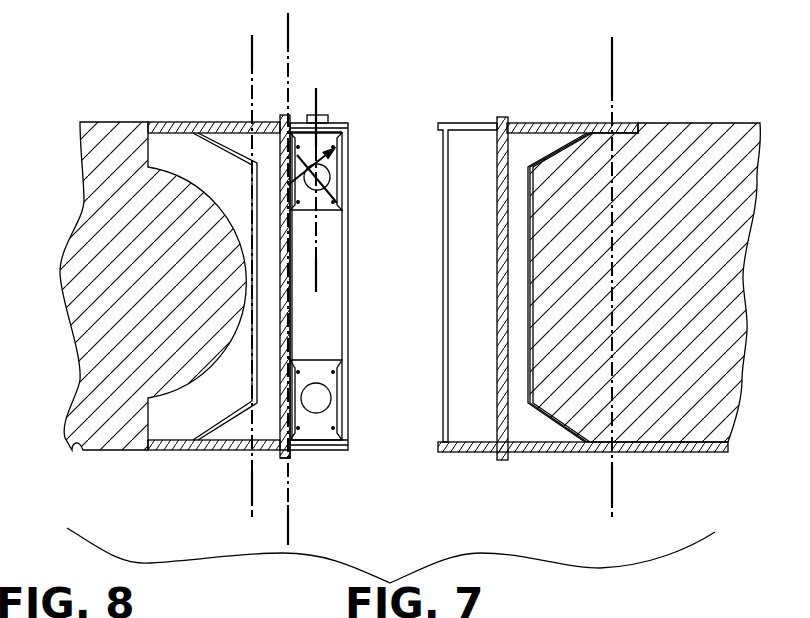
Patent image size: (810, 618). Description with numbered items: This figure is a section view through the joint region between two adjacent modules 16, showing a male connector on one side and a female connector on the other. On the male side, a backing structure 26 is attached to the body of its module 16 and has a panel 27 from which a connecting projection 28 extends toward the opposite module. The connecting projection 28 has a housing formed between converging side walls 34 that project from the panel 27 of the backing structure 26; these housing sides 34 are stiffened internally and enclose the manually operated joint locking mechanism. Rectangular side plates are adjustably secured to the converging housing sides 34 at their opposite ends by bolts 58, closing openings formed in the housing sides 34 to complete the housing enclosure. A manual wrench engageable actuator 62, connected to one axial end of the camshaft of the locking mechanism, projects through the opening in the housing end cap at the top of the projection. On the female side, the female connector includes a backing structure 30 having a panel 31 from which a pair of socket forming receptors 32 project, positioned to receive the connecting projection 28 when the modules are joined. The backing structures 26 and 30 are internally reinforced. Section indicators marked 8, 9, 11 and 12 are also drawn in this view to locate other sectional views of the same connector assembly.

The module 16 is at (123, 110).
The backing structure 26 is at (174, 92).
The connecting projection 28 is at (358, 174).
The converging side walls 34 is at (333, 327).
The manual wrench engageable actuator 62 is at (318, 147).
The bolts 58 is at (337, 428).
The panel 27 is at (290, 450).
The socket forming receptors 32 is at (474, 116).
The backing structure 30 is at (518, 108).
The panel 31 is at (490, 450).
The section line 8- 8 is at (272, 51).
The section line 11- 11 is at (263, 28).
The section line 12- 12 is at (302, 102).
The section line 9- 9 is at (588, 52).